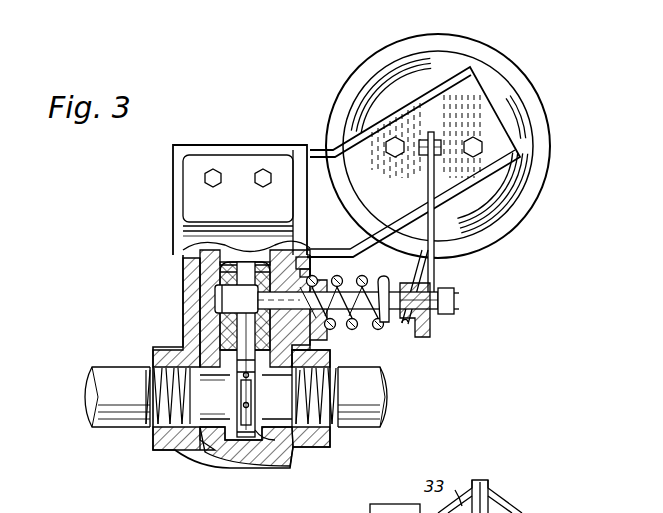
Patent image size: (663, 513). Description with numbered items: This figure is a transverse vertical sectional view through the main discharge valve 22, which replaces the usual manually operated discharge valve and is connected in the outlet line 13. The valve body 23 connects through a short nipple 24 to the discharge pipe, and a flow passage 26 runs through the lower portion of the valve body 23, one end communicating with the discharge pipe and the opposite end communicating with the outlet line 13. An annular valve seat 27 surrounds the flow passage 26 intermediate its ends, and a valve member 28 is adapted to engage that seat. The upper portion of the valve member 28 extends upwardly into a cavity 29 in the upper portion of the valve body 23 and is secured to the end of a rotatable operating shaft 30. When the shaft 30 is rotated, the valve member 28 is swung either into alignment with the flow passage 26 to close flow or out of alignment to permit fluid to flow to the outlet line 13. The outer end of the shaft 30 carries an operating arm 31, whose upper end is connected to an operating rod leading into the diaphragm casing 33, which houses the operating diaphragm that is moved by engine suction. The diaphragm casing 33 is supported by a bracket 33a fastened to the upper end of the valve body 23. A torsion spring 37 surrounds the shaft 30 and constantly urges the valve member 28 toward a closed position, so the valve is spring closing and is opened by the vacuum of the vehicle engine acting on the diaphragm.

The outlet line 13 is at (363, 425).
The main discharge valve 22 is at (180, 266).
The valve body 23 is at (188, 295).
The short nipple 24 is at (120, 430).
The flow passage 26 is at (215, 445).
The annular valve seat 27 is at (262, 468).
The valve member 28 is at (237, 440).
The cavity 29 is at (195, 323).
The rotatable operating shaft 30 is at (367, 318).
The operating arm 31 is at (430, 258).
The diaphragm casing 33 is at (523, 197).
The bracket 33a is at (322, 148).
The torsion spring 37 is at (385, 322).